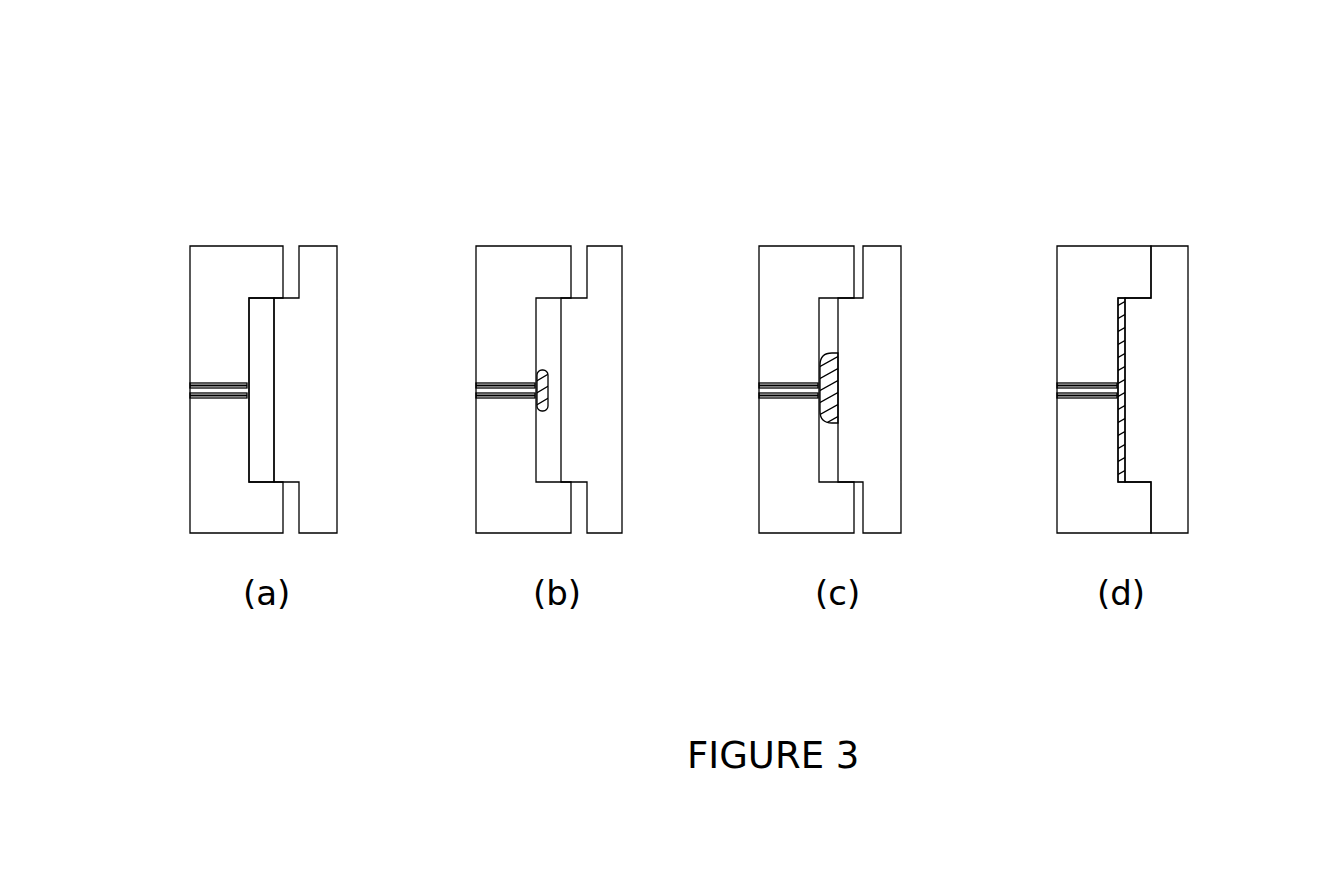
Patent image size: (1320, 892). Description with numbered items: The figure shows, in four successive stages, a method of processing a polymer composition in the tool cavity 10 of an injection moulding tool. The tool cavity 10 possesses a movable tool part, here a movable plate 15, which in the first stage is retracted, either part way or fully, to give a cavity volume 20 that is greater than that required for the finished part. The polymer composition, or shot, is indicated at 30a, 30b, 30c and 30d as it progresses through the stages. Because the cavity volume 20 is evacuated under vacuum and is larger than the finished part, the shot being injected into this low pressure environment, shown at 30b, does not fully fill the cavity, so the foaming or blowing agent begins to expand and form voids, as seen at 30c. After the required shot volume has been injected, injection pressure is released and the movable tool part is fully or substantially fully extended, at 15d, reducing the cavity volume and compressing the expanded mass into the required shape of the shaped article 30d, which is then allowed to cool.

The tool cavity 10 is at (268, 216).
The movable tool part 15 is at (275, 360).
The cavity volume 20 is at (260, 348).
The polymer composition 30a is at (222, 397).
The polymer composition 30b is at (547, 382).
The polymer composition 30c is at (838, 377).
The shaped article 30d is at (1125, 325).
The movable tool part fully extended 15d is at (1125, 395).